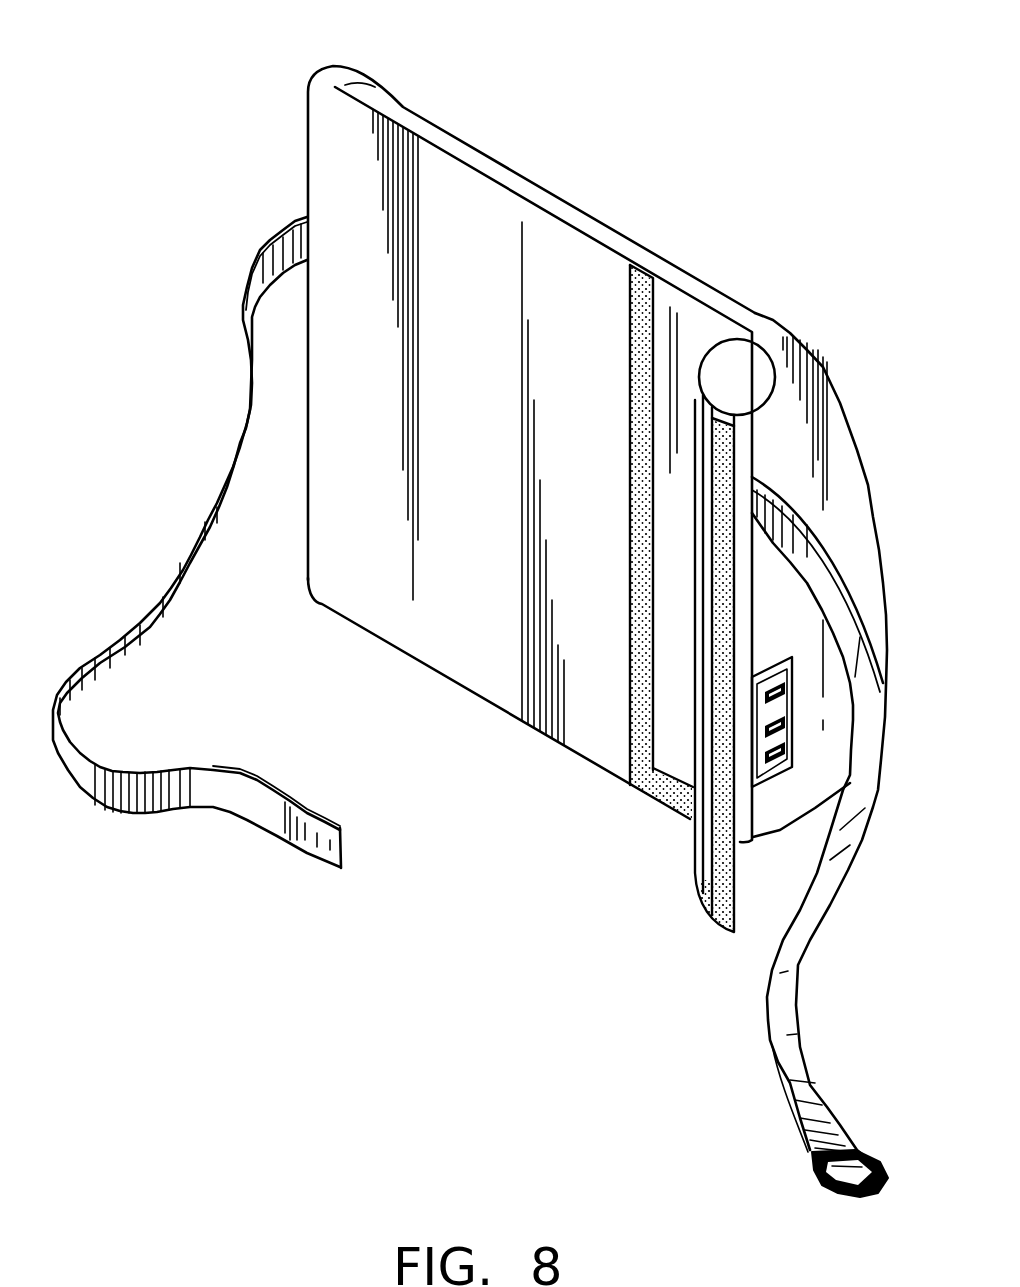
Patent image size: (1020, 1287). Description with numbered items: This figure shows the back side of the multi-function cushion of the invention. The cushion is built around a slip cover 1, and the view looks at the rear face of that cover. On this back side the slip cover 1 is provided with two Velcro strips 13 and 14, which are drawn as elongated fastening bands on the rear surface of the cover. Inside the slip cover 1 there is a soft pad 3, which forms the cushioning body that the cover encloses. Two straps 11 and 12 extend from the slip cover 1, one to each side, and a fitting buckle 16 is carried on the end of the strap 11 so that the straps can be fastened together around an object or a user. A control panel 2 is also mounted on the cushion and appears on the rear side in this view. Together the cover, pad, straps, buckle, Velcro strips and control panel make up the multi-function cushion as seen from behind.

The slip cover 1 is at (528, 150).
The control panel 2 is at (773, 778).
The soft pad 3 is at (678, 762).
The strap 11 is at (768, 1034).
The strap 12 is at (345, 850).
The Velcro strip 13 is at (660, 290).
The Velcro strip 14 is at (745, 340).
The fitting buckle 16 is at (812, 1172).